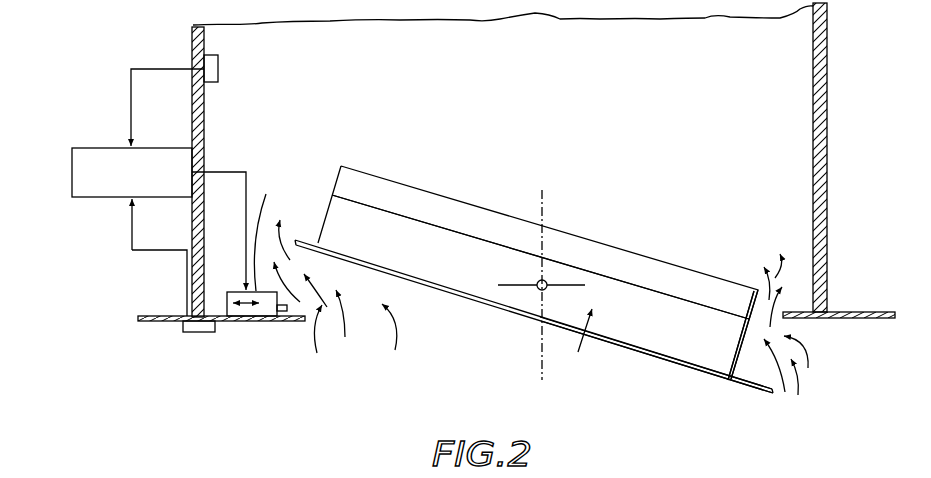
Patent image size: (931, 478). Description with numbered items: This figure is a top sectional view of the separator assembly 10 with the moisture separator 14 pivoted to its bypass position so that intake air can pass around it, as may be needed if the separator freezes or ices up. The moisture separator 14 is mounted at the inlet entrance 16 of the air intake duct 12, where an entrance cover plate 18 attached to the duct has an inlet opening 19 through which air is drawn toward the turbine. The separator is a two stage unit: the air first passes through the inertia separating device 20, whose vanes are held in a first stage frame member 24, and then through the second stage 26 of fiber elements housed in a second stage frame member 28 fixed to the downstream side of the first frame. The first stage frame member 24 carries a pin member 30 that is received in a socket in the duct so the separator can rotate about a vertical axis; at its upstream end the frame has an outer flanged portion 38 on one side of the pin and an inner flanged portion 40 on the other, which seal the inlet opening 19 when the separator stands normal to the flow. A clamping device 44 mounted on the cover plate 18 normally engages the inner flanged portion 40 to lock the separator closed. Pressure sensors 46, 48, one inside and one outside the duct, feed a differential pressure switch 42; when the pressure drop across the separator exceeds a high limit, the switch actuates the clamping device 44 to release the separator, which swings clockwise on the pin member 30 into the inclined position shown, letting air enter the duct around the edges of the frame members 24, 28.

The separator assembly 10 is at (496, 337).
The air intake duct 12 is at (203, 115).
The moisture separator 14 is at (410, 175).
The inlet entrance 16 is at (382, 335).
The entrance cover plate 18 is at (238, 322).
The inlet opening 19 is at (307, 322).
The inertia separating device 20 is at (576, 346).
The first stage frame member 24 is at (647, 303).
The second stage 26 is at (569, 246).
The second stage frame member 28 is at (622, 257).
The pin member 30 is at (538, 281).
The outer flanged portion 38 is at (655, 360).
The inner flanged portion 40 is at (488, 305).
The differential pressure switch 42 is at (103, 147).
The clamping device 44 is at (273, 229).
The pressure sensor 46 is at (218, 67).
The pressure sensor 48 is at (185, 331).